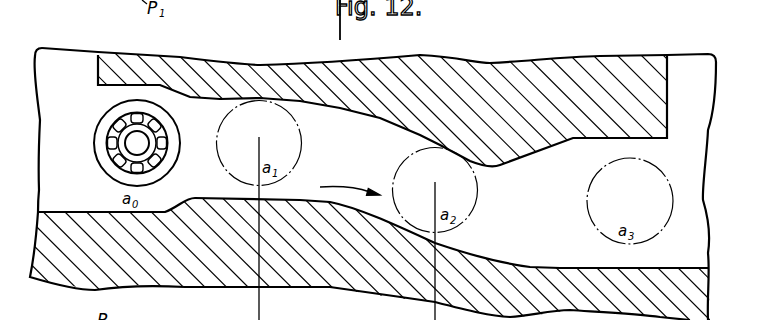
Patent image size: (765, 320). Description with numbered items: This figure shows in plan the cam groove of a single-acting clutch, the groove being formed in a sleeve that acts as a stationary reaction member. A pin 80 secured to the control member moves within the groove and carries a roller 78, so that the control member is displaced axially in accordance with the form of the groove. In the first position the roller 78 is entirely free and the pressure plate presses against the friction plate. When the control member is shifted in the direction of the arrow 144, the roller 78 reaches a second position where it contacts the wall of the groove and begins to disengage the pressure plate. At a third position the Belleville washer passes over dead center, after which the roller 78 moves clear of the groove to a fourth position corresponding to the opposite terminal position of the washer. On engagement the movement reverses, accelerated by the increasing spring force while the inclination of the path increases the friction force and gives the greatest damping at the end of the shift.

The roller 78 is at (172, 138).
The pin 80 is at (135, 147).
The arrow 144 is at (350, 180).